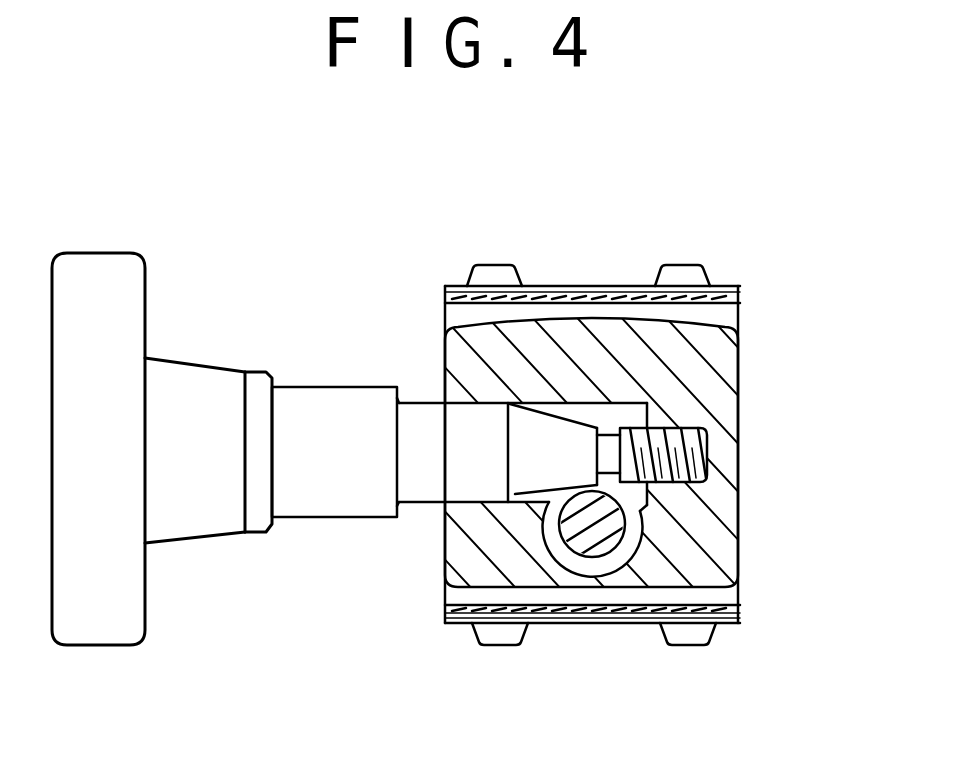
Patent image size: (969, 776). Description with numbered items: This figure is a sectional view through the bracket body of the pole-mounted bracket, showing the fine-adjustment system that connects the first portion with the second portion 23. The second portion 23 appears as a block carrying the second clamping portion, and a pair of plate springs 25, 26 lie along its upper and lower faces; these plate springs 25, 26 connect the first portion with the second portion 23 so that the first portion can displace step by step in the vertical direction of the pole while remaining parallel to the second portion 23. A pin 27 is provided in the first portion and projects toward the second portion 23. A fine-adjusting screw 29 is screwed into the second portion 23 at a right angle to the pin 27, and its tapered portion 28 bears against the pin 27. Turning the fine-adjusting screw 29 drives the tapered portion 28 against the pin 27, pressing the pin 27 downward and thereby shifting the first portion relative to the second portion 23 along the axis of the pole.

The second portion 23 is at (740, 556).
The plate spring 25 is at (740, 297).
The plate spring 26 is at (740, 610).
The pin 27 is at (587, 557).
The tapered portion 28 is at (520, 492).
The fine-adjusting screw 29 is at (199, 358).